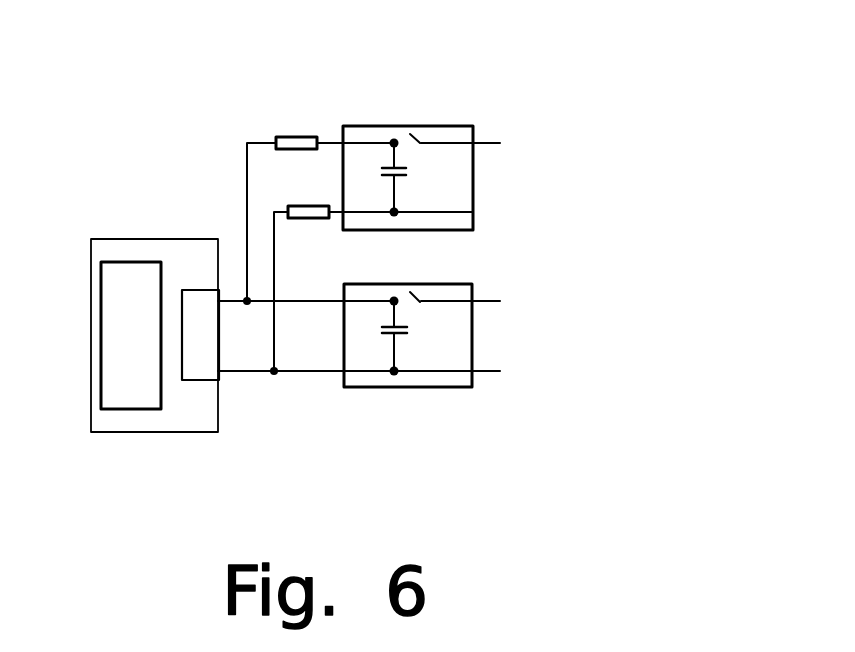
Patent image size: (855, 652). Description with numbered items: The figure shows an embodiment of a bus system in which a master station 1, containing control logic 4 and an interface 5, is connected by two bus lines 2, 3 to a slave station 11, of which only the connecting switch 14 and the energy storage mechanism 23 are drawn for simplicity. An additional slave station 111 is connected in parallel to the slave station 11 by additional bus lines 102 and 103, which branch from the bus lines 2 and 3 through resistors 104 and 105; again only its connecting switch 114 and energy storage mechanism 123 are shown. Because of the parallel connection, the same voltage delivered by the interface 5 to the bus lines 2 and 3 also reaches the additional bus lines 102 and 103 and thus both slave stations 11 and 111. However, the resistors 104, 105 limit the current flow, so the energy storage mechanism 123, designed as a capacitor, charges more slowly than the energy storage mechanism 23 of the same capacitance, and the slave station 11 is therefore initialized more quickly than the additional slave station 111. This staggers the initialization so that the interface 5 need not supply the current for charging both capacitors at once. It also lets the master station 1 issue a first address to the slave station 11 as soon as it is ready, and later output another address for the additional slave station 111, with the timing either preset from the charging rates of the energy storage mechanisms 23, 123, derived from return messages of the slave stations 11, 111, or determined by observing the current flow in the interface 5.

The master station 1 is at (128, 239).
The bus line 2 is at (491, 300).
The bus line 3 is at (491, 373).
The control logic 4 is at (112, 320).
The interface 5 is at (200, 372).
The slave station 11 is at (445, 387).
The connecting switch 14 is at (411, 292).
The energy storage mechanism 23 is at (391, 334).
The additional bus line 102 is at (247, 165).
The additional bus line 103 is at (273, 232).
The resistor 104 is at (286, 137).
The resistor 105 is at (307, 219).
The additional slave station 111 is at (357, 126).
The connecting switch 114 is at (411, 134).
The energy storage mechanism 123 is at (402, 176).